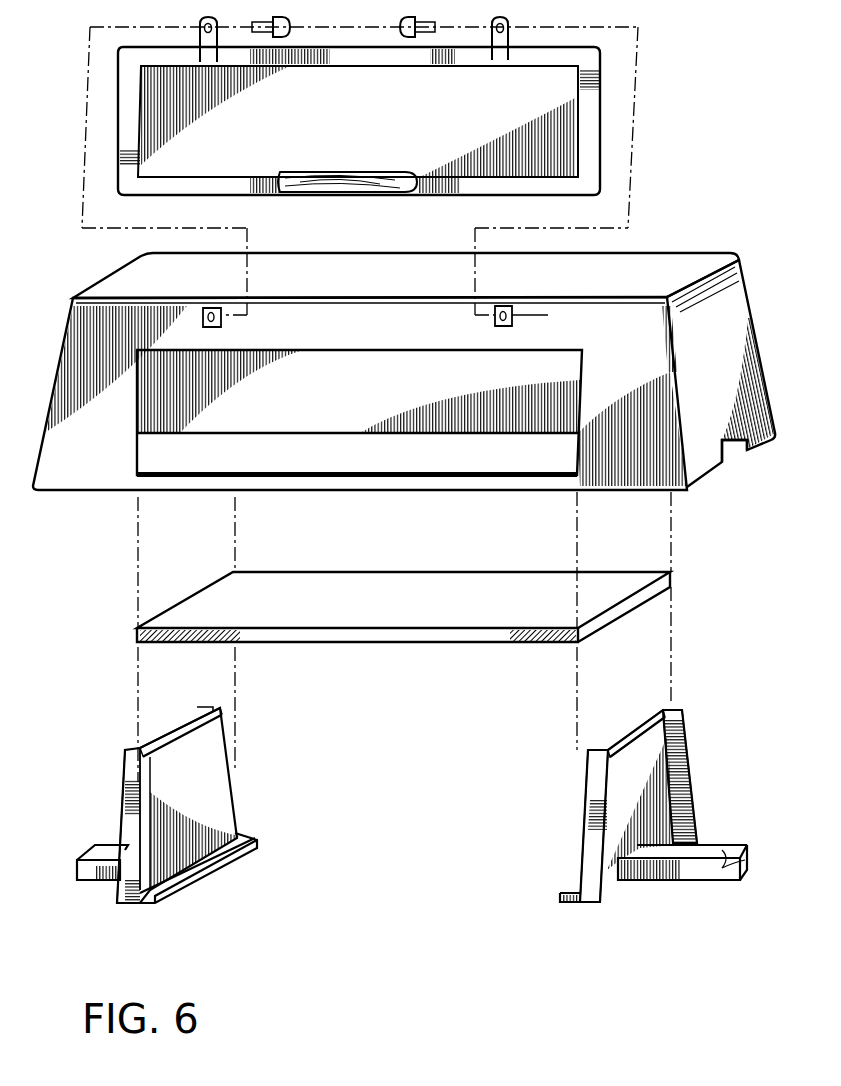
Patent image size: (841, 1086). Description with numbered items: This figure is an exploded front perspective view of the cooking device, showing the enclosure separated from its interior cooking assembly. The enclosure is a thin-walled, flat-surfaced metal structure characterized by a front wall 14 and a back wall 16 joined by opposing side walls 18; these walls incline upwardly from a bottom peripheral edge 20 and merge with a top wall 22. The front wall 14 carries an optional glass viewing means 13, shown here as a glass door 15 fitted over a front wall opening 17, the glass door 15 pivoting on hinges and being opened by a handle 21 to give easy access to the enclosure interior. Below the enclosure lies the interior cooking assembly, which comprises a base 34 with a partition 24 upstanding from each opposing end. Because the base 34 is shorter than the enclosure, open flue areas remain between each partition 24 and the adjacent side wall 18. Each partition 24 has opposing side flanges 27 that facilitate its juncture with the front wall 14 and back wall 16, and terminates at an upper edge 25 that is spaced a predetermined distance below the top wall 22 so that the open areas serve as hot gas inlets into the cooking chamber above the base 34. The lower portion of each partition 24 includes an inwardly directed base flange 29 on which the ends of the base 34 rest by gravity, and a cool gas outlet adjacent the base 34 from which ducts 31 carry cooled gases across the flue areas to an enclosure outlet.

The glass viewing means 13 is at (606, 92).
The glass door 15 is at (304, 133).
The handle 21 is at (332, 175).
The top wall 22 is at (655, 272).
The side walls 18 is at (725, 320).
The front wall 14 is at (112, 460).
The back wall 16 is at (366, 399).
The front wall opening 17 is at (358, 480).
The bottom peripheral edge 20 is at (700, 450).
The base 34 is at (423, 589).
The partition 24 is at (172, 785).
The upper edge 25 is at (187, 723).
The side flanges 27 is at (122, 768).
The base flange 29 is at (178, 884).
The ducts 31 is at (73, 870).